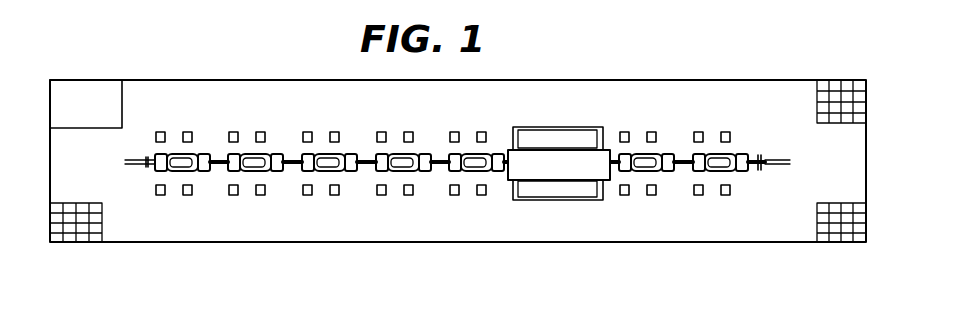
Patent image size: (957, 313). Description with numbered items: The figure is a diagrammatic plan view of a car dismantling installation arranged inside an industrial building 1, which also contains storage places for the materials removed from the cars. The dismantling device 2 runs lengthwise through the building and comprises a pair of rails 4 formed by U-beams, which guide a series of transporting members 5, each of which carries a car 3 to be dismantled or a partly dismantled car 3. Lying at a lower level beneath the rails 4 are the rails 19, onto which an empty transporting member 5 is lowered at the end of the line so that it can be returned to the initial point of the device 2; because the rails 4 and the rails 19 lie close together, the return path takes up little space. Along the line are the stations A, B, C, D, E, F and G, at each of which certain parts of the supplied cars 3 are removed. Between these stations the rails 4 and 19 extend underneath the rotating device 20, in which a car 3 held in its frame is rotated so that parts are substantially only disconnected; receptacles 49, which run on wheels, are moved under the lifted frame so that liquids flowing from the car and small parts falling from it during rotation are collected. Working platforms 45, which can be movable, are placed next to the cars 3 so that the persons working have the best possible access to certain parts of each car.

The industrial building 1 is at (68, 244).
The device 2 is at (299, 174).
The car 3 is at (396, 173).
The rails 4 is at (147, 167).
The transporting member 5 is at (755, 171).
The rails 19 is at (126, 166).
The rotating device 20 is at (546, 214).
The working platform 45 is at (622, 192).
The receptacle 49 is at (540, 180).
The station A is at (191, 161).
The station B is at (264, 161).
The station C is at (339, 161).
The station D is at (397, 201).
The station E is at (485, 161).
The station F is at (656, 161).
The station G is at (730, 161).